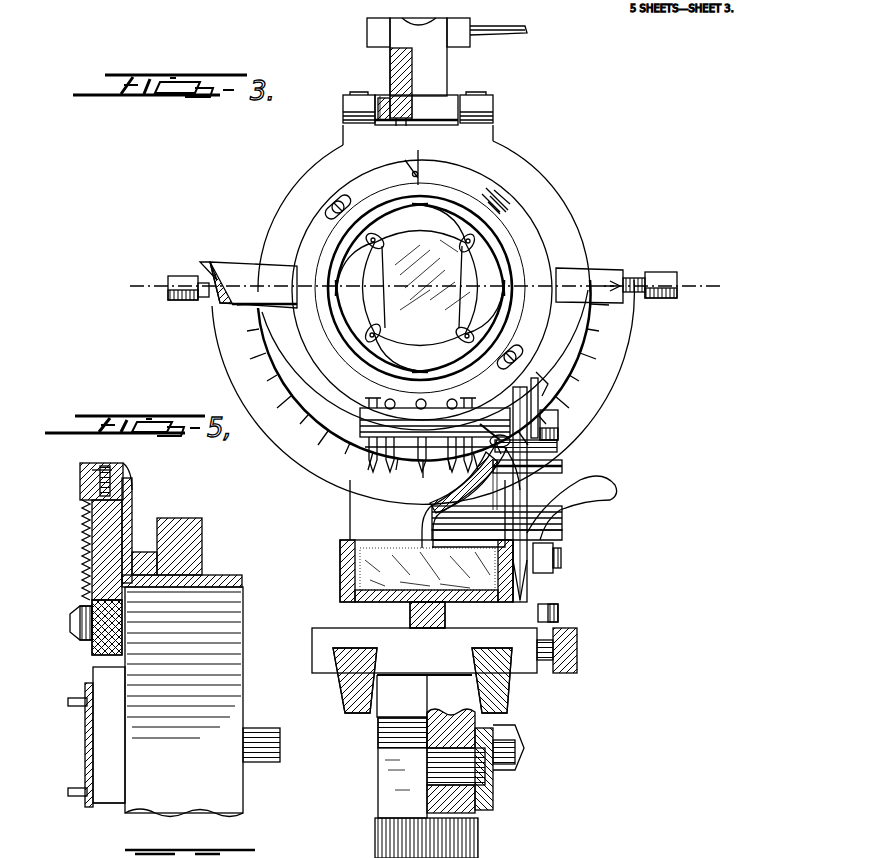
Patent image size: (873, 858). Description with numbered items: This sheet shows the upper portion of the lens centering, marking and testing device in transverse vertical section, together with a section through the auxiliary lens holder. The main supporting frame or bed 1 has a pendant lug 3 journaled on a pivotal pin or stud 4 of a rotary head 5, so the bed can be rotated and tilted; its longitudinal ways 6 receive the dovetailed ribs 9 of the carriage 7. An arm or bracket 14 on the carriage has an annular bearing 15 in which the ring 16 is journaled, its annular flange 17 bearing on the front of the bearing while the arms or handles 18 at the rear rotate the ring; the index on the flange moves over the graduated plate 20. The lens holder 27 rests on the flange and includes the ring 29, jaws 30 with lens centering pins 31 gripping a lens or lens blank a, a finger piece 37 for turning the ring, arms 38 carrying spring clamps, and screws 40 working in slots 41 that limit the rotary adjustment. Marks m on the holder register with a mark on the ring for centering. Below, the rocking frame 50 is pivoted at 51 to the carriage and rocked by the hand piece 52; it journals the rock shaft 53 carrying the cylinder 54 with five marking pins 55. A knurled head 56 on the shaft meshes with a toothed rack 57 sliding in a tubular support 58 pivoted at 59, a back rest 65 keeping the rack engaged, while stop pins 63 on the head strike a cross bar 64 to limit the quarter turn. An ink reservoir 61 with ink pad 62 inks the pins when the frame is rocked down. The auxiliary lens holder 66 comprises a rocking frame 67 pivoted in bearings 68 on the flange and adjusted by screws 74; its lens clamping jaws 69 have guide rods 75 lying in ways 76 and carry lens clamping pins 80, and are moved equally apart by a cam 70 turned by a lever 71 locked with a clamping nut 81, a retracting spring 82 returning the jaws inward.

In FIG. 3, the main supporting frame or bed 1 is at (437, 687).
In FIG. 3, the pendant lug 3 is at (480, 808).
In FIG. 3, the pivotal pin or stud 4 is at (419, 289).
In FIG. 3, the rotary head 5 is at (375, 834).
In FIG. 3, the longitudinal ways 6 is at (476, 676).
In FIG. 3, the carriage 7 is at (522, 672).
In FIG. 3, the dovetailed ribs 9 is at (538, 672).
In FIG. 3, the arm or bracket 14 is at (350, 512).
In FIG. 5, the arm or bracket 14 is at (190, 518).
In FIG. 5, the annular bearing 15 is at (202, 556).
In FIG. 3, the ring 16 is at (328, 198).
In FIG. 5, the ring 16 is at (232, 578).
In FIG. 3, the annular flange 17 is at (535, 170).
In FIG. 5, the annular flange 17 is at (133, 512).
In FIG. 3, the arms or handles 18 is at (664, 272).
In FIG. 3, the graduated plate 20 is at (423, 393).
In FIG. 3, the lens holder 27 is at (468, 292).
In FIG. 3, the ring 29 is at (454, 176).
In FIG. 3, the jaws 30 is at (490, 290).
In FIG. 3, the lens centering pins 31 is at (419, 287).
In FIG. 3, the operating member or finger piece 37 is at (490, 200).
In FIG. 3, the arms 38 is at (590, 268).
In FIG. 3, the screws 40 is at (505, 362).
In FIG. 3, the slots 41 is at (514, 350).
In FIG. 3, the rocking frame 50 is at (545, 510).
In FIG. 3, the pivot 51 is at (562, 558).
In FIG. 3, the hand piece 52 is at (618, 500).
In FIG. 3, the rock shaft or spindle 53 is at (556, 446).
In FIG. 3, the cylinder or barrel 54 is at (366, 420).
In FIG. 3, the marking pins 55 is at (412, 480).
In FIG. 3, the gear or knurled head 56 is at (558, 420).
In FIG. 3, the toothed rack 57 is at (540, 487).
In FIG. 3, the tubular support 58 is at (535, 583).
In FIG. 3, the pivot 59 is at (558, 614).
In FIG. 3, the ink reservoir 61 is at (380, 600).
In FIG. 3, the ink pad or roller 62 is at (448, 604).
In FIG. 3, the stop pins 63 is at (555, 390).
In FIG. 3, the cross bar 64 is at (545, 456).
In FIG. 3, the back rest 65 is at (484, 422).
In FIG. 3, the auxiliary lens holder 66 is at (440, 60).
In FIG. 5, the auxiliary lens holder 66 is at (92, 566).
In FIG. 3, the rocking frame 67 is at (440, 100).
In FIG. 5, the rocking frame 67 is at (124, 480).
In FIG. 3, the bearings 68 is at (490, 100).
In FIG. 3, the lens clamping jaws 69 is at (367, 40).
In FIG. 5, the lens clamping jaws 69 is at (110, 795).
In FIG. 5, the cam 70 is at (92, 650).
In FIG. 5, the lever 71 is at (74, 636).
In FIG. 3, the adjusting screws 74 is at (390, 80).
In FIG. 5, the adjusting screws 74 is at (80, 480).
In FIG. 3, the guide rods 75 is at (522, 34).
In FIG. 5, the guide rods 75 is at (105, 598).
In FIG. 5, the recesses or ways 76 is at (109, 735).
In FIG. 5, the lens clamping pins 80 is at (70, 702).
In FIG. 5, the clamping nut 81 is at (68, 792).
In FIG. 5, the retracting spring 82 is at (82, 528).
In FIG. 3, the lens or lens blank a is at (440, 262).
In FIG. 5, the lens or lens blank a is at (85, 745).
In FIG. 3, the mark m is at (200, 262).